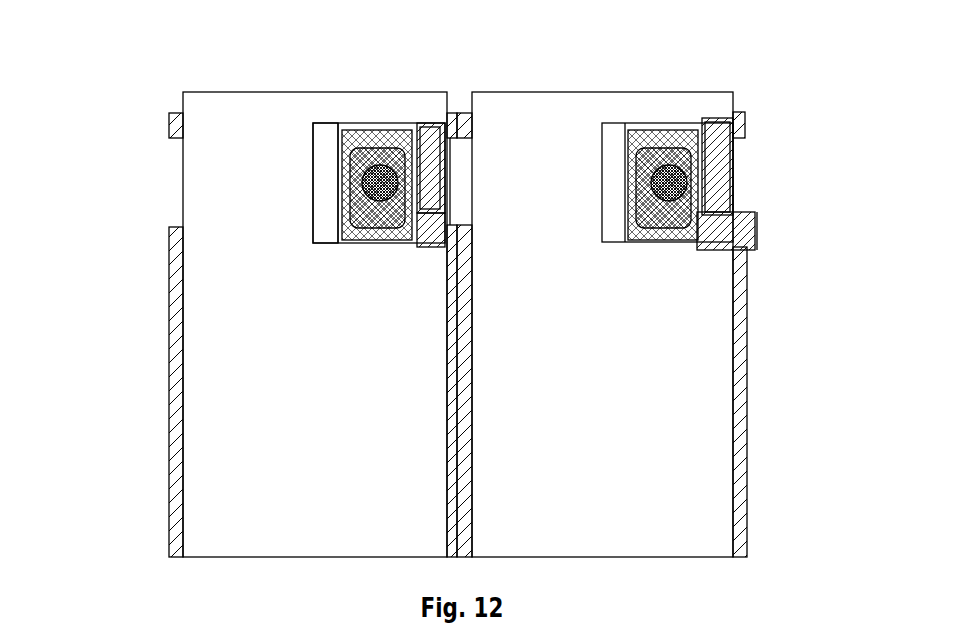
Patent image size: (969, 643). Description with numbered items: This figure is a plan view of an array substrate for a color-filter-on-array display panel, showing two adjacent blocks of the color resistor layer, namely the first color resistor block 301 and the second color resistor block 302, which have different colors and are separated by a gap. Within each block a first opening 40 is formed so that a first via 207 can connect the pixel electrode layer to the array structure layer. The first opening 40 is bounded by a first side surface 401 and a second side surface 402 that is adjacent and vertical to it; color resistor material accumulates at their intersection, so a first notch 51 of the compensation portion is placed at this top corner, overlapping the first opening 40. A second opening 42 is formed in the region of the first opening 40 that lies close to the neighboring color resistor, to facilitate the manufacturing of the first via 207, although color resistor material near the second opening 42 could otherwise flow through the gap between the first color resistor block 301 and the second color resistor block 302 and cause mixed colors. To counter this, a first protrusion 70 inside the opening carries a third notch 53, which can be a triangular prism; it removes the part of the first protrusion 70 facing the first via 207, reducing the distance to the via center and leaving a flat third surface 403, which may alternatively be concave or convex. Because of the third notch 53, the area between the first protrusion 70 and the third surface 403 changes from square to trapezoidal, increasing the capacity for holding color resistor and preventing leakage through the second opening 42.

The first color resistor block 301 is at (203, 368).
The second color resistor block 302 is at (721, 345).
The first side surface 401 is at (313, 165).
The second side surface 402 is at (380, 128).
The third surface 403 is at (718, 220).
The first opening 40 is at (350, 221).
The second opening 42 is at (746, 162).
The first notch 51 is at (318, 127).
The third notch 53 is at (429, 204).
The first protrusion 70 is at (757, 222).
The first via 207 is at (657, 170).